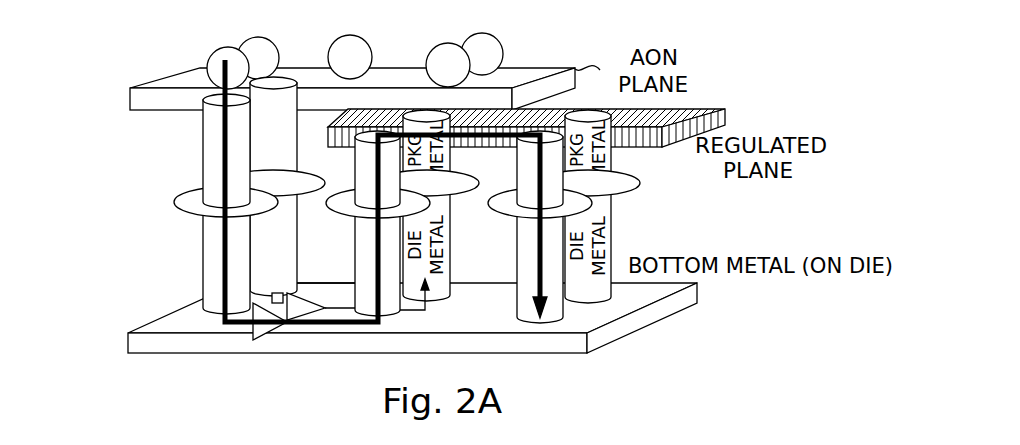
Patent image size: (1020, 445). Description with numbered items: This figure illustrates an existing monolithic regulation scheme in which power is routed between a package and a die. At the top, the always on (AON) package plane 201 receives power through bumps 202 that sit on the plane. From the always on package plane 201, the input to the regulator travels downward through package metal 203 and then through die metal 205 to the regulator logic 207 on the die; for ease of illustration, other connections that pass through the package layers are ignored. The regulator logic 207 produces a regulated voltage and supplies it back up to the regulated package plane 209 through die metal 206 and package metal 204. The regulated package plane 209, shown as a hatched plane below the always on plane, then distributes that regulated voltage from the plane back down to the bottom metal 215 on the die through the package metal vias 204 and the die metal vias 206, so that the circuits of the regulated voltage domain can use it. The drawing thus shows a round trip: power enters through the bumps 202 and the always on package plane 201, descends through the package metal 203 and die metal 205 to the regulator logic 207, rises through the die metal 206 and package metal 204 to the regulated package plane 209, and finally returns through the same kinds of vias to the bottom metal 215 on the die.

The always on (AON) package plane 201 is at (130, 93).
The bumps 202 is at (212, 50).
The package metal 203 is at (203, 137).
The package metal 204 is at (273, 134).
The die metal 205 is at (203, 253).
The die metal 206 is at (355, 254).
The regulator logic 207 is at (275, 338).
The regulated package plane 209 is at (725, 121).
The bottom metal 215 is at (648, 317).